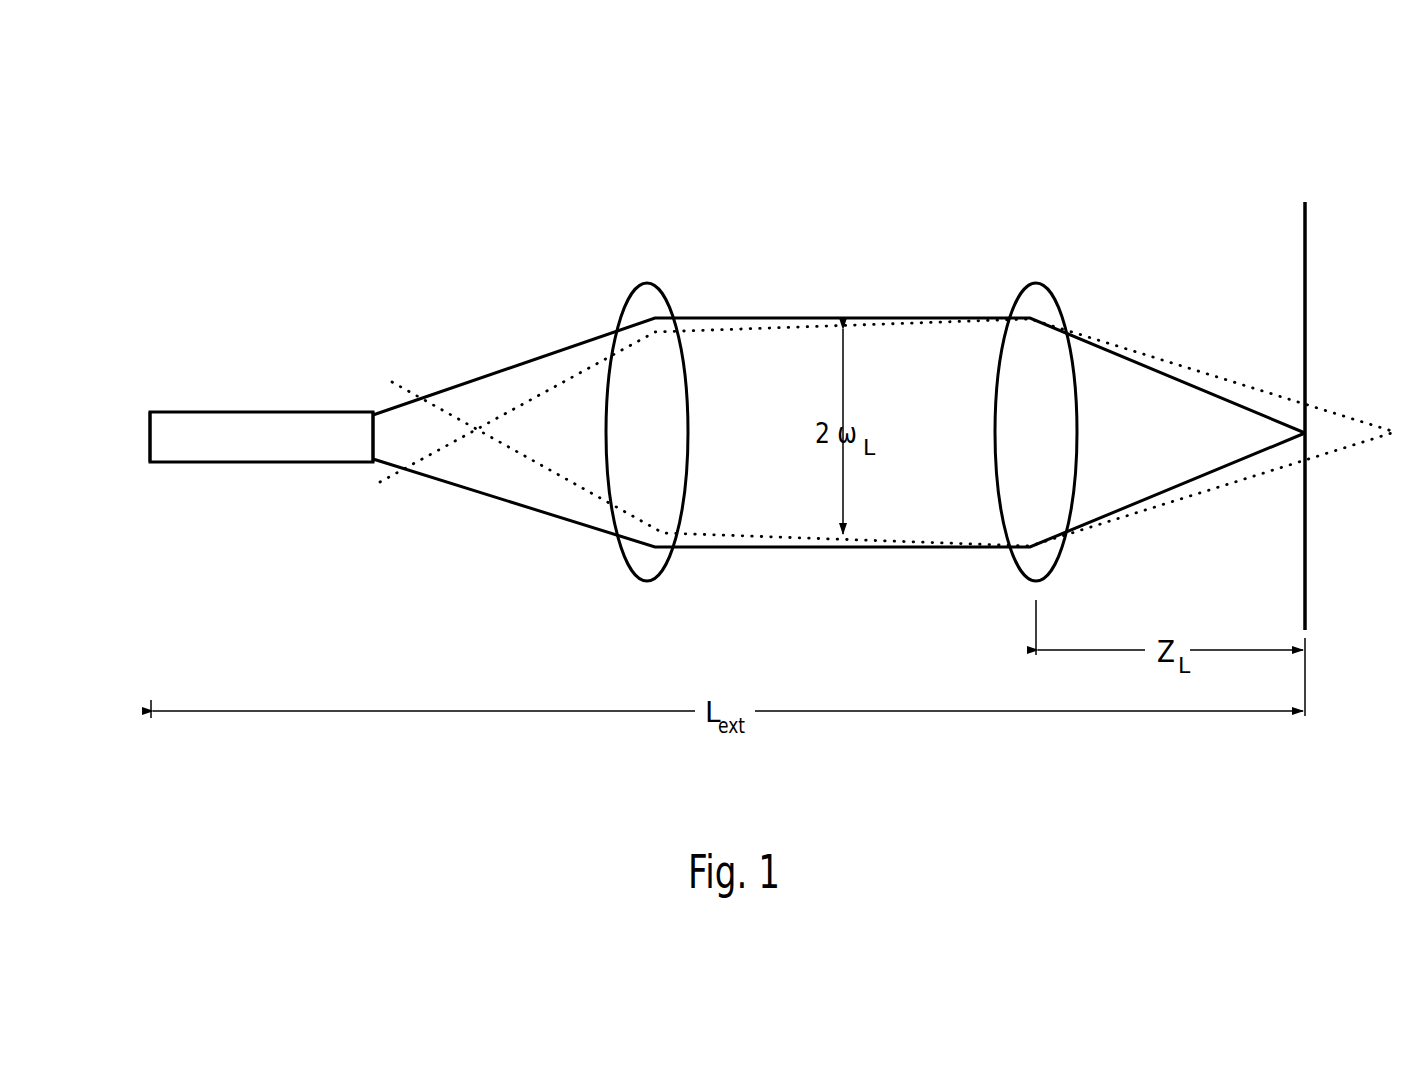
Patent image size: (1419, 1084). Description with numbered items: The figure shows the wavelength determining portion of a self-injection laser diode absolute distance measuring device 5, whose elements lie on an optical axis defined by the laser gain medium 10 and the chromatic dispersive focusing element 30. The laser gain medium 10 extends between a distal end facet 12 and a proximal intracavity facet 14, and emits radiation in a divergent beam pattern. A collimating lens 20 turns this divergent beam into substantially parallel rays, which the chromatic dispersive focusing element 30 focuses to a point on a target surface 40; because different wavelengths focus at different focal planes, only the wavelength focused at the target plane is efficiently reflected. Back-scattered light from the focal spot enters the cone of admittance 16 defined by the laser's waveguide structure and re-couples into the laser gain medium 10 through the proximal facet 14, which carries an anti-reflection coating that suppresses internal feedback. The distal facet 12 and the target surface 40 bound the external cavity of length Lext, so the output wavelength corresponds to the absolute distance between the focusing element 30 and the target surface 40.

The self-injection laser diode absolute distance measuring device 5 is at (1159, 184).
The laser gain medium 10 is at (267, 412).
The distal end facet 12 is at (154, 412).
The proximal intracavity facet 14 is at (380, 412).
The cone of admittance 16 is at (517, 503).
The collimating lens 20 is at (633, 292).
The chromatic dispersive focusing element 30 is at (1025, 295).
The target surface 40 is at (1308, 257).